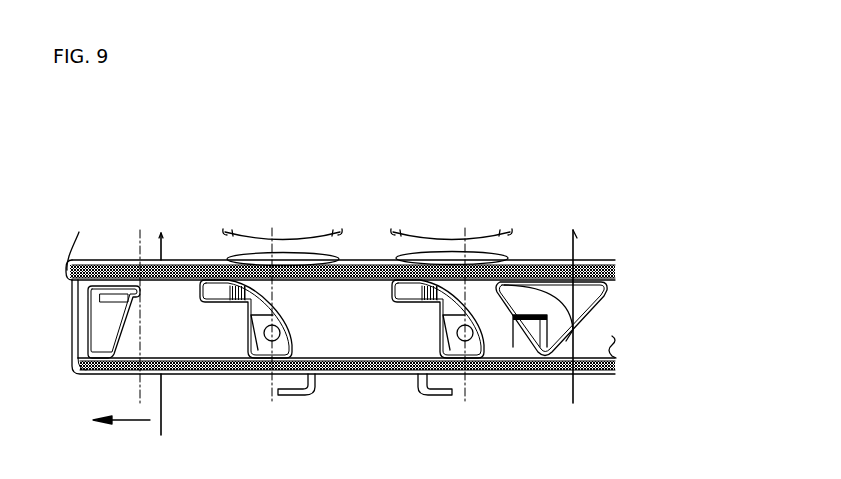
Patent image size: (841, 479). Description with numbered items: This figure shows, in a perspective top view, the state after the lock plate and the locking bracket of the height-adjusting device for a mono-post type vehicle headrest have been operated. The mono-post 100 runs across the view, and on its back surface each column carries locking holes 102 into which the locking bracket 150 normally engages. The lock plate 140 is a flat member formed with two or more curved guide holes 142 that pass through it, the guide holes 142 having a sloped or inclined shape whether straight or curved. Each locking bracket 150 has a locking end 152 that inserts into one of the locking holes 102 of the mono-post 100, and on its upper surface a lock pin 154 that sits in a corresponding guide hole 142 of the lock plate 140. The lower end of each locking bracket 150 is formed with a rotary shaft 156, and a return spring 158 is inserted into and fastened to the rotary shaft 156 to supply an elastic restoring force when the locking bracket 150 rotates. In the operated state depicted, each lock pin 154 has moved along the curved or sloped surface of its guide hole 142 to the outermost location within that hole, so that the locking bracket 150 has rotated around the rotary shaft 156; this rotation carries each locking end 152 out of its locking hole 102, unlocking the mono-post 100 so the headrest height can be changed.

The mono-post 100 is at (576, 411).
The locking hole 102 is at (300, 252).
The lock plate 140 is at (525, 259).
The guide hole 142 is at (270, 356).
The locking bracket 150 is at (437, 242).
The locking end 152 is at (257, 250).
The lock pin 154 is at (281, 333).
The rotary shaft 156 is at (547, 358).
The return spring 158 is at (347, 376).